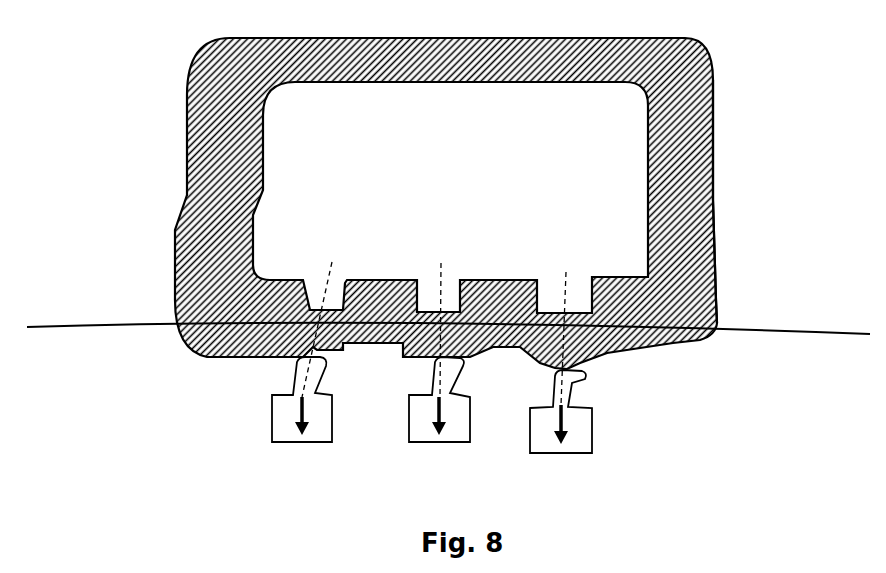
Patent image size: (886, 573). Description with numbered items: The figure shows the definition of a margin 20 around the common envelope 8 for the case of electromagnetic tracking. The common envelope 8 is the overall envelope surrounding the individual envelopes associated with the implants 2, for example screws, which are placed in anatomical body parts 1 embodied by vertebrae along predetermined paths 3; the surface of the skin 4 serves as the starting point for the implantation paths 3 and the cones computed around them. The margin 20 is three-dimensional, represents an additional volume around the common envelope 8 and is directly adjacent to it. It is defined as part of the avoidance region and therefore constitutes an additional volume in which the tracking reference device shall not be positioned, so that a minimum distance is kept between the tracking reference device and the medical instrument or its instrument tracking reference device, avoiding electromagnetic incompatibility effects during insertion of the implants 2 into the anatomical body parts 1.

The margin 20 is at (710, 70).
The common envelope 8 is at (700, 177).
The skin 4 is at (810, 328).
The anatomical body part 1 is at (578, 423).
The implant 2 is at (558, 440).
The path 3 is at (567, 377).